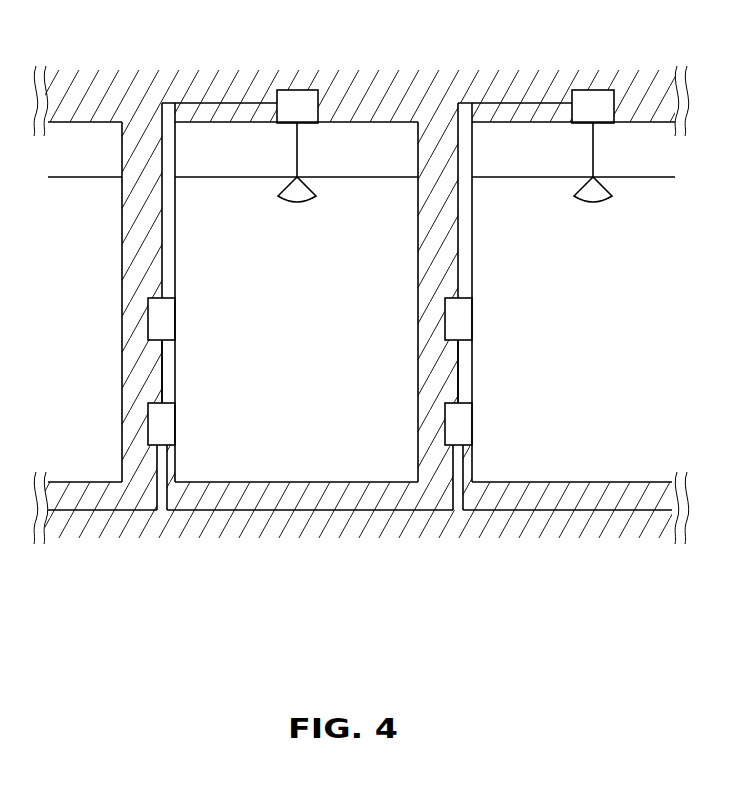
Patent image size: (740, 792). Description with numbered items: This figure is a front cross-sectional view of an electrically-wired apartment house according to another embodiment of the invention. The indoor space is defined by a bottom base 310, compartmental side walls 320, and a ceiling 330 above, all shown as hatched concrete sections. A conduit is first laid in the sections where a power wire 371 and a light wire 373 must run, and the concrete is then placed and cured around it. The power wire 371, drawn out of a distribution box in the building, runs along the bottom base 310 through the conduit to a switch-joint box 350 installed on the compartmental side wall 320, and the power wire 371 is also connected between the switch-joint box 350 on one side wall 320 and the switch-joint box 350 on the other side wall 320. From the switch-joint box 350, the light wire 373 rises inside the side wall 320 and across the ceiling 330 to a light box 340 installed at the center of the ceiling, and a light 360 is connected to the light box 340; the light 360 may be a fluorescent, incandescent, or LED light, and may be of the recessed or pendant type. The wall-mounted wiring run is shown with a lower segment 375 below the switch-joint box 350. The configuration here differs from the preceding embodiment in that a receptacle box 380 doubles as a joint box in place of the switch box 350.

The bottom base 310 is at (300, 512).
The compartmental side wall 320 is at (145, 398).
The ceiling 330 is at (415, 90).
The light box 340 is at (304, 90).
The switch-joint box 350 is at (176, 310).
The light 360 is at (306, 206).
The power wire 371 is at (103, 512).
The light wire 373 is at (168, 250).
The lower panel 375 is at (168, 364).
The receptacle box 380 is at (165, 428).